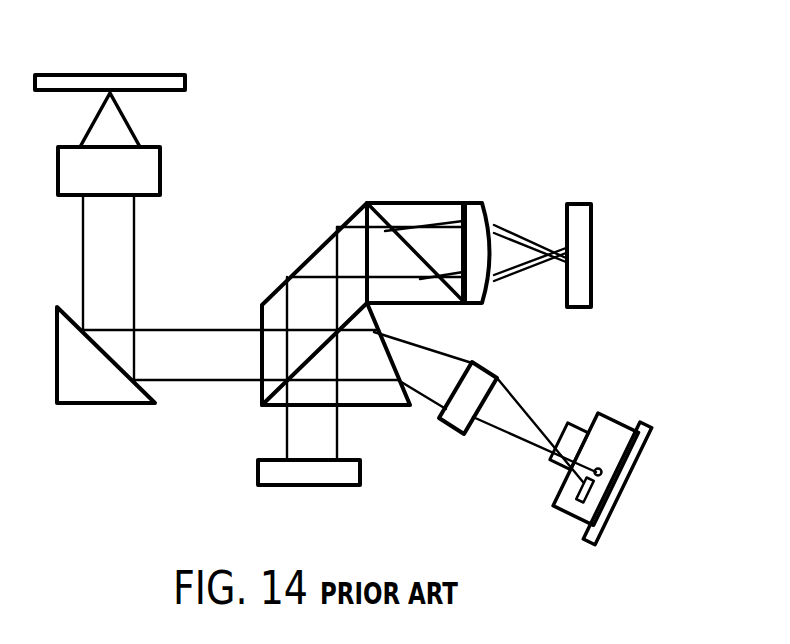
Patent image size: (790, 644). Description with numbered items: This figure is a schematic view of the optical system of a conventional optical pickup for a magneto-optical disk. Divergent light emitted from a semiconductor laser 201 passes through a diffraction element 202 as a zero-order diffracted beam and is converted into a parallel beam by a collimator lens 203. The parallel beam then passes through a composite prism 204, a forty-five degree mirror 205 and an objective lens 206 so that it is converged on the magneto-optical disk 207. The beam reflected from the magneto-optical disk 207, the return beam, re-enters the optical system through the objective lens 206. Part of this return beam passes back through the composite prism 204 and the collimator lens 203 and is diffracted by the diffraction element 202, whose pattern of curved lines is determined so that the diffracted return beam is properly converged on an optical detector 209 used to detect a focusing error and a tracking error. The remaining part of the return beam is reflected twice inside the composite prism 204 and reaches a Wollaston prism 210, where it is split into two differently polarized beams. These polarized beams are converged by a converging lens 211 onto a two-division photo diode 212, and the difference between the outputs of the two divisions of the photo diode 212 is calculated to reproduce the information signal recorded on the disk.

The semiconductor laser 201 is at (617, 478).
The diffraction element 202 is at (553, 442).
The collimator lens 203 is at (452, 436).
The composite prism 204 is at (306, 259).
The 45° mirror 205 is at (107, 406).
The objective lens 206 is at (163, 170).
The magneto-optical disk 207 is at (183, 73).
The optical detector 209 is at (566, 507).
The Wollaston prism 210 is at (408, 202).
The converging lens 211 is at (480, 210).
The two-division photo diode 212 is at (594, 232).